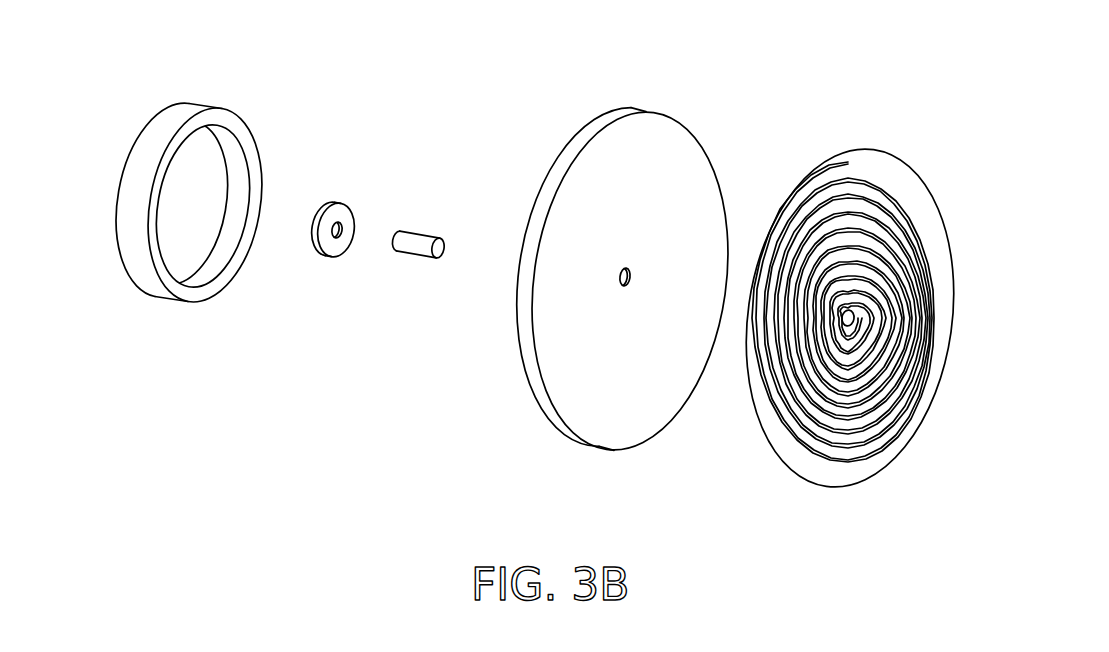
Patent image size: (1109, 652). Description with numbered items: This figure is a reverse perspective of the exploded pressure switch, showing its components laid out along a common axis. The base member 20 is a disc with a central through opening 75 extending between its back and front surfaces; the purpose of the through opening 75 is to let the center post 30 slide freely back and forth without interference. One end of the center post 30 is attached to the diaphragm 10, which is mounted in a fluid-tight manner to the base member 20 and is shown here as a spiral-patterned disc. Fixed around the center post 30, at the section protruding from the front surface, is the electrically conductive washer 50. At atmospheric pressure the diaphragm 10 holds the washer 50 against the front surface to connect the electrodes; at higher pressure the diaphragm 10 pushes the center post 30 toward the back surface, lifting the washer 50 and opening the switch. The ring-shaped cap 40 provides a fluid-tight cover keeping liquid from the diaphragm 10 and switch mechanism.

The diaphragm 10 is at (900, 173).
The base member 20 is at (629, 240).
The center post 30 is at (417, 242).
The cap 40 is at (168, 118).
The electrically conductive washer 50 is at (335, 205).
The through opening 75 is at (624, 268).